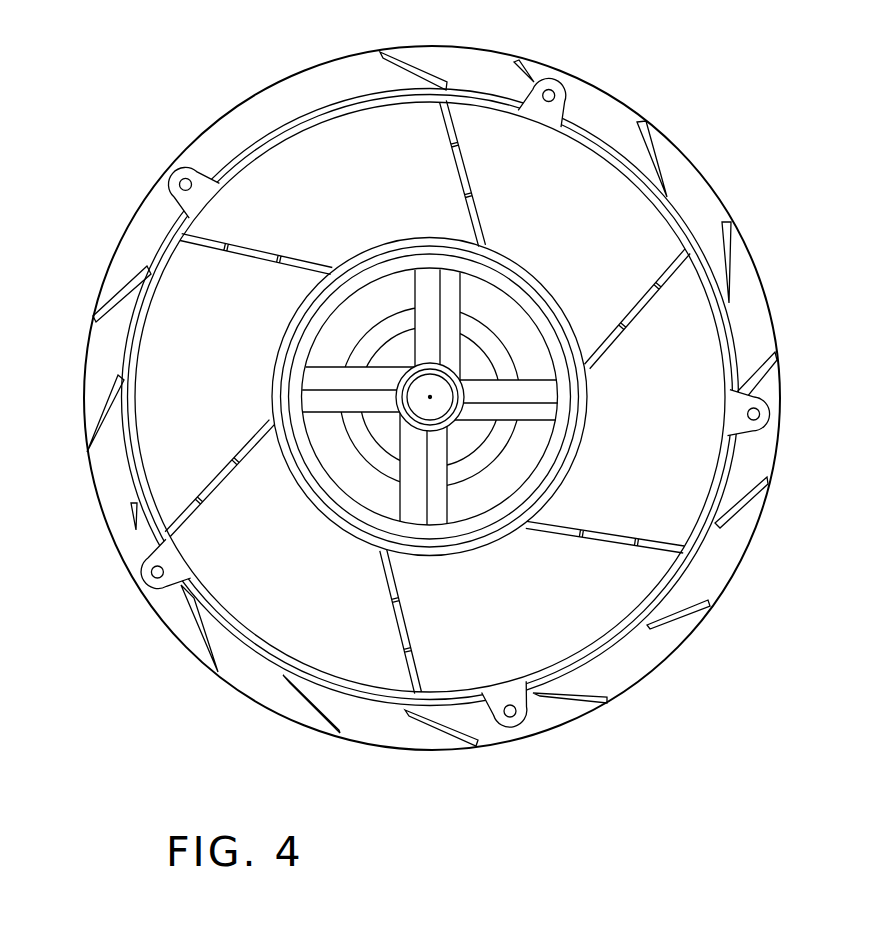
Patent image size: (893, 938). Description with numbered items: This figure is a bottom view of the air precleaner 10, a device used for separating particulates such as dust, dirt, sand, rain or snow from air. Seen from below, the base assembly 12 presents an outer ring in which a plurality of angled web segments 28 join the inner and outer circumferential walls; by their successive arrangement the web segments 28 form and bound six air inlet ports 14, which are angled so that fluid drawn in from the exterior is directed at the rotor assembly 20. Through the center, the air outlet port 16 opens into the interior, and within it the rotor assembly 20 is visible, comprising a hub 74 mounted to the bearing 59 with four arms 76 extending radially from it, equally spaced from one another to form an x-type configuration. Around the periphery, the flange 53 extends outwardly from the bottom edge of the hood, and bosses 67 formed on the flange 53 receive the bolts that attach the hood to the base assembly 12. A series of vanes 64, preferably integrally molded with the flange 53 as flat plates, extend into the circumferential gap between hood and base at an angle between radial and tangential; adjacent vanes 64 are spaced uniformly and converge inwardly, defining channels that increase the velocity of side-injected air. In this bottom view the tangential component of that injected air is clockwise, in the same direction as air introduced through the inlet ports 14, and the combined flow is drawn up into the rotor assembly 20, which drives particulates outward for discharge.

The air precleaner 10 is at (668, 690).
The base assembly 12 is at (737, 325).
The air inlet ports 14 is at (262, 245).
The air outlet port 16 is at (320, 347).
The rotor assembly 20 is at (530, 423).
The web segments 28 is at (293, 170).
The flange 53 is at (112, 267).
The bearing 59 is at (510, 305).
The vanes 64 is at (157, 183).
The bosses 67 is at (163, 195).
The hub 74 is at (447, 425).
The arms 76 is at (420, 300).